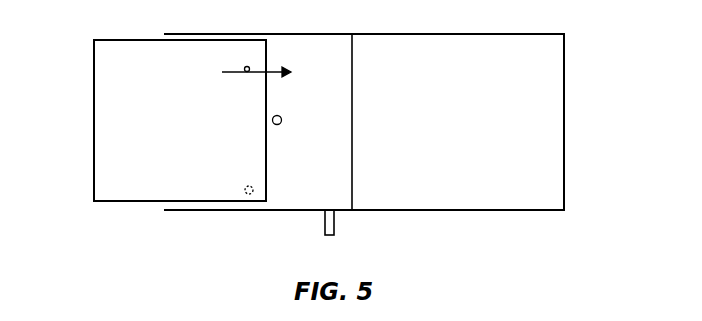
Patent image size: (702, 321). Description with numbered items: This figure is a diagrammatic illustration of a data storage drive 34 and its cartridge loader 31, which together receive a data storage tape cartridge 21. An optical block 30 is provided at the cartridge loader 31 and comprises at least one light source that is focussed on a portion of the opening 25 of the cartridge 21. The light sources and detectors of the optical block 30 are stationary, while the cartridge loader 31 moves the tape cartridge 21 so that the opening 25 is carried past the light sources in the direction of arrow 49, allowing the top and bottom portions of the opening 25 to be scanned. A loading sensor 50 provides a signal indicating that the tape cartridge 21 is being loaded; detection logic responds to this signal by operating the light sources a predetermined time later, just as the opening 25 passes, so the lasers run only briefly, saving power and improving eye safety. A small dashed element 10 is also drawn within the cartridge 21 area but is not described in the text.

The fastener / attachment point 10 is at (249, 185).
The data storage tape cartridge 21 is at (94, 55).
The opening 25 is at (230, 210).
The optical block 30 is at (336, 228).
The cartridge loader 31 is at (300, 33).
The data storage drive 34 is at (530, 34).
The arrow 49 is at (246, 72).
The loading sensor 50 is at (279, 116).